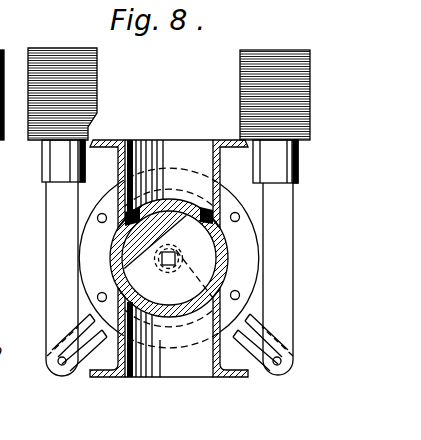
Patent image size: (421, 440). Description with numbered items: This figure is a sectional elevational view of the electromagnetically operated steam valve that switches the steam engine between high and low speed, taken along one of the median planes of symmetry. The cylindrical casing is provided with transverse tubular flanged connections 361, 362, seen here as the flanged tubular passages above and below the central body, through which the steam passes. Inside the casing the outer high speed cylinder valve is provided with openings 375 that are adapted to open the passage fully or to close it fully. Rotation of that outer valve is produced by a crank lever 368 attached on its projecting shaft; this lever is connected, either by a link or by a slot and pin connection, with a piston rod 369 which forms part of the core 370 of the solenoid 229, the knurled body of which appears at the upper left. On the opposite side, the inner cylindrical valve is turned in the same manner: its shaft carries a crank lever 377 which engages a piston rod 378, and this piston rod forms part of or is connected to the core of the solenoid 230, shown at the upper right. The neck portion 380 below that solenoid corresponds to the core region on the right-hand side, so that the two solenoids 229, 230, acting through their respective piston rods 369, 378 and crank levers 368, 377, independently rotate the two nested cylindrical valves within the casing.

The solenoid 229 is at (89, 66).
The solenoid 230 is at (240, 62).
The transverse tubular flanged connection 361 is at (160, 147).
The transverse tubular flanged connection 362 is at (163, 370).
The crank lever 368 is at (88, 350).
The piston rod 369 is at (53, 286).
The core 370 is at (49, 169).
The openings 375 is at (117, 262).
The crank lever 377 is at (250, 353).
The piston rod 378 is at (278, 321).
The right neck 380 is at (289, 172).